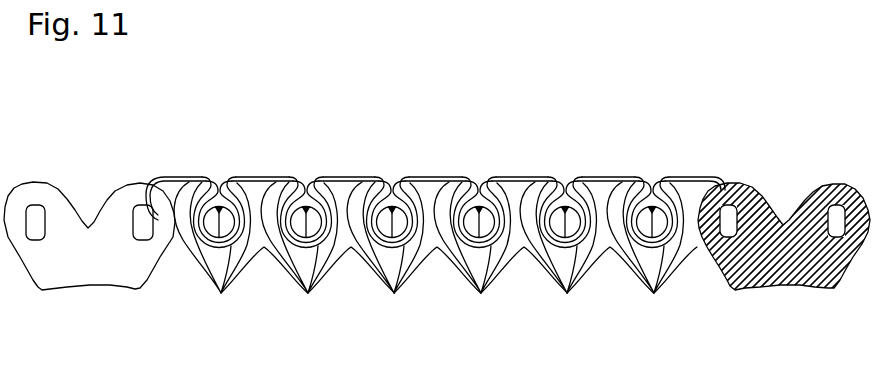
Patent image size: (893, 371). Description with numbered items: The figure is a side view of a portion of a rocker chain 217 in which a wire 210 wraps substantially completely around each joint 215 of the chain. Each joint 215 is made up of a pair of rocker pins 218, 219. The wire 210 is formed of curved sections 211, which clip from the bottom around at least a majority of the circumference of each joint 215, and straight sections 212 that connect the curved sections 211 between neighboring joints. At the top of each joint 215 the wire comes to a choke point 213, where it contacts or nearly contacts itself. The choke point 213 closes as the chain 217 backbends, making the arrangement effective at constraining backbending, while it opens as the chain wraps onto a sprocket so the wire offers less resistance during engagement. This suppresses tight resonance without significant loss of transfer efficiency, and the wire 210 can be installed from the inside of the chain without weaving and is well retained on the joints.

The wire 210 is at (428, 177).
The curved sections 211 is at (394, 293).
The straight sections 212 is at (257, 177).
The choke point 213 is at (306, 178).
The joint 215 is at (221, 293).
The chain 217 is at (727, 120).
The rocker pin 218 is at (288, 223).
The rocker pin 219 is at (317, 223).